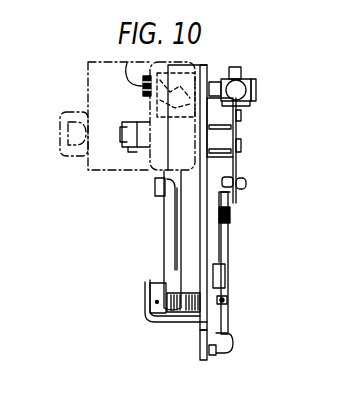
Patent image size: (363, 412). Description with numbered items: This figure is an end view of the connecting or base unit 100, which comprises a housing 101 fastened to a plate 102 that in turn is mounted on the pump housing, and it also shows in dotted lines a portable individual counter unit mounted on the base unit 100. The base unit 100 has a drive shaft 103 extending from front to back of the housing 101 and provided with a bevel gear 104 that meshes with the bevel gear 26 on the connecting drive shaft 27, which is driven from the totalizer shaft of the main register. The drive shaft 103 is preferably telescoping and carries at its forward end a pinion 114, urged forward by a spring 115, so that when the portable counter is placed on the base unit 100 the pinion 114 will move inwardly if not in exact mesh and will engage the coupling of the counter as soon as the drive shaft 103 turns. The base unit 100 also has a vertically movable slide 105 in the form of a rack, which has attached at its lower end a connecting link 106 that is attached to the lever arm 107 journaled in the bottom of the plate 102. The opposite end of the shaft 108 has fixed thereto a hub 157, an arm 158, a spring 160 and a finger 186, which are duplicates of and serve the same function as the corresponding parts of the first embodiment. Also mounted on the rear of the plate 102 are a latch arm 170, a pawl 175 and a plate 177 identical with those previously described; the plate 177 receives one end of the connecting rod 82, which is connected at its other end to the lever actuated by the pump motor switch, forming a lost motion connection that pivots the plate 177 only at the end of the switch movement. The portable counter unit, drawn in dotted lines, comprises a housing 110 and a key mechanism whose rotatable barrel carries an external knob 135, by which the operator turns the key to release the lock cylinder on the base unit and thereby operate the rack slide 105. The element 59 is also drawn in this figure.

The housing 110 is at (84, 70).
The external knob 135 is at (62, 147).
The spring 115 is at (164, 63).
The pinion 114 is at (127, 64).
The drive shaft 103 is at (150, 100).
The base unit 100 is at (197, 66).
The housing 101 is at (201, 72).
The arm 158 is at (203, 336).
The drive shaft 27 is at (238, 66).
The bevel gear 26 is at (244, 80).
The bevel gear 104 is at (255, 88).
The connecting rod 82 is at (247, 168).
The plate 177 is at (246, 137).
The pawl 175 is at (232, 200).
The latch arm 170 is at (233, 221).
The finger 186 is at (229, 247).
The hub 157 is at (225, 288).
The shaft 108 is at (227, 300).
The hook 59 is at (234, 341).
The slide 105 is at (155, 193).
The connecting link 106 is at (166, 247).
The plate 102 is at (145, 315).
The lever arm 107 is at (160, 297).
The spring 160 is at (178, 309).